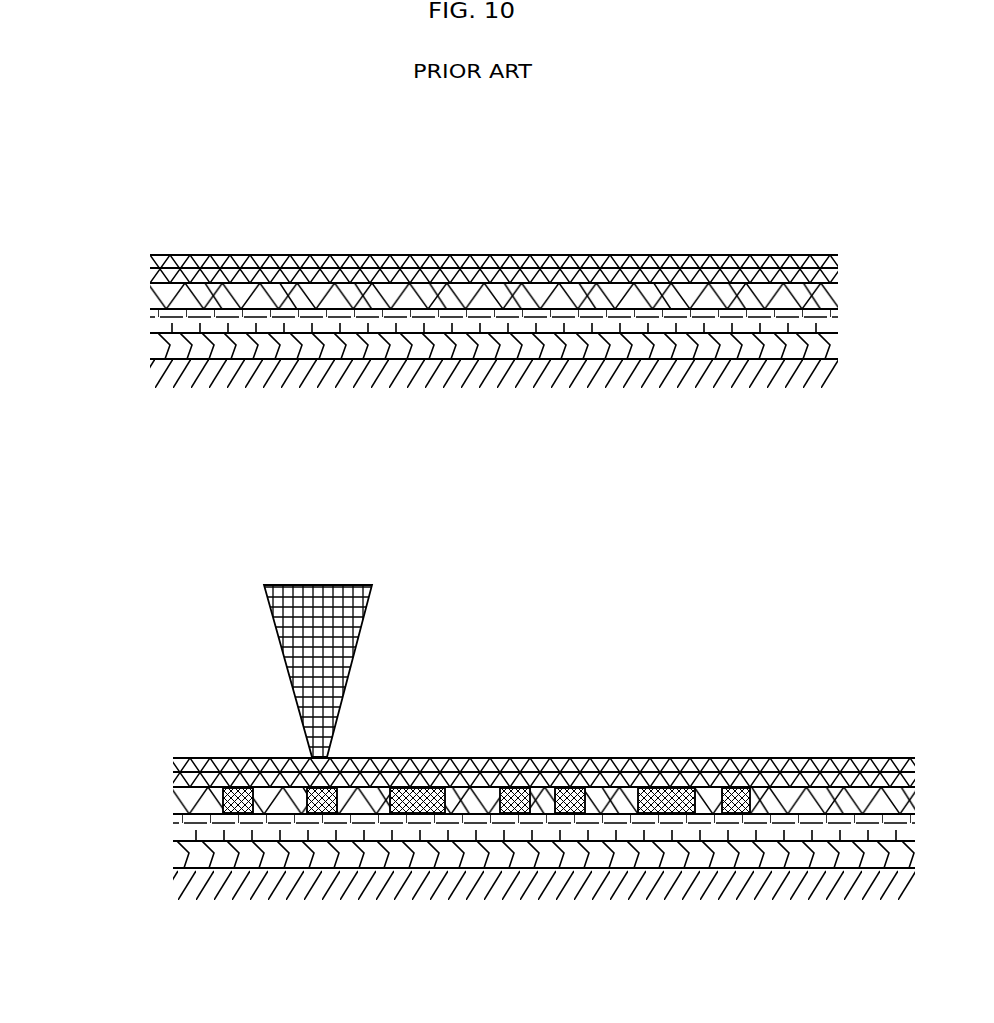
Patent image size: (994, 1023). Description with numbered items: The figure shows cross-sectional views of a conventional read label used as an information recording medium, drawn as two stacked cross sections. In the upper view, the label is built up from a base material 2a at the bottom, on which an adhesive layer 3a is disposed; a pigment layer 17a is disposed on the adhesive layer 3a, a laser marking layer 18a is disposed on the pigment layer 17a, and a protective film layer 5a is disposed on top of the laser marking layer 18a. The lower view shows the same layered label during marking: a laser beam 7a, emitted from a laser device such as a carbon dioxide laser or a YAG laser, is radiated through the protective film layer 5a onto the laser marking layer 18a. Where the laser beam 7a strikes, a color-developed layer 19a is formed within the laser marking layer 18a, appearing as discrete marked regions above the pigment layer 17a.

The base material 2a is at (157, 377).
The adhesive layer 3a is at (158, 345).
The protective film layer 5a is at (153, 270).
The laser beam 7a is at (313, 650).
The pigment layer 17a is at (157, 322).
The laser marking layer 18a is at (157, 299).
The color-developed layer 19a is at (423, 790).